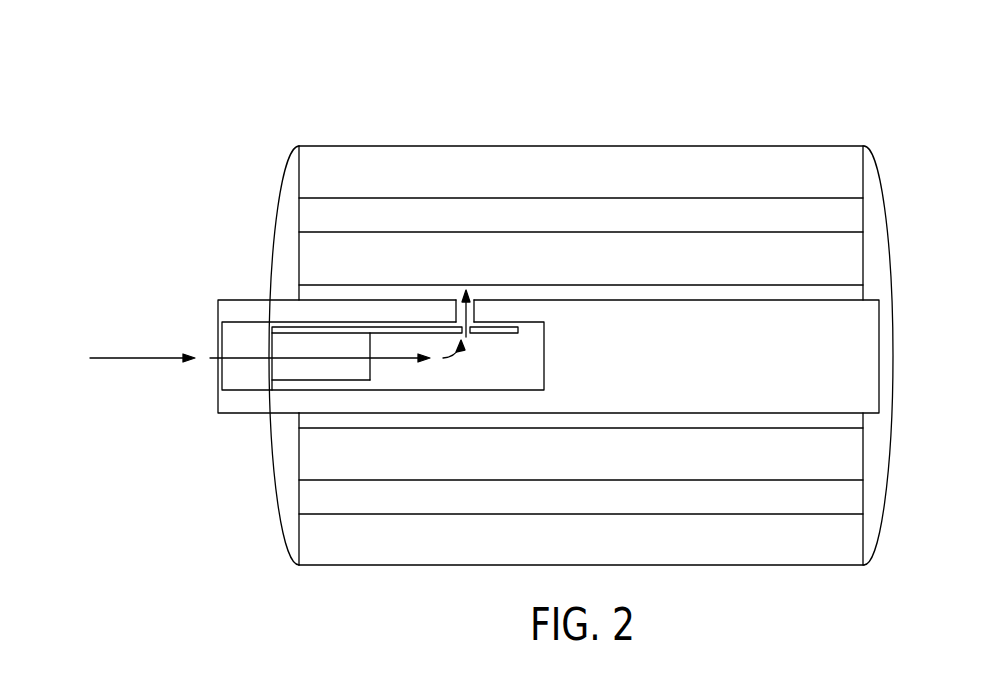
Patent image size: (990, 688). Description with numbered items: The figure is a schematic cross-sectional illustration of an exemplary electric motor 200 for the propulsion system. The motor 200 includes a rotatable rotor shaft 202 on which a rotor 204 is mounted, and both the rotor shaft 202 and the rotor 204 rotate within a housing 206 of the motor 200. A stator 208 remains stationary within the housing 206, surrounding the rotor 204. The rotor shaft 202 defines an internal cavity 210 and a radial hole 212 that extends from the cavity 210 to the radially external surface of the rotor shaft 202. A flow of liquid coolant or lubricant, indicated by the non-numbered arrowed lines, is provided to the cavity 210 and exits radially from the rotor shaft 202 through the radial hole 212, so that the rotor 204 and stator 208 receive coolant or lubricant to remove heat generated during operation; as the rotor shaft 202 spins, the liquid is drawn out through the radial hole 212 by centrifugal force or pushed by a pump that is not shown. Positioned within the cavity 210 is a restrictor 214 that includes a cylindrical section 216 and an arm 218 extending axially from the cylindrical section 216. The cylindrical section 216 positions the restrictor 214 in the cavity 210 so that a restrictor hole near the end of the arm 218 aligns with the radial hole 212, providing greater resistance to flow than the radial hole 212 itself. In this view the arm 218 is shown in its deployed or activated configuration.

The electric motor 200 is at (833, 86).
The rotor shaft 202 is at (868, 360).
The rotor 204 is at (857, 258).
The housing 206 is at (872, 530).
The stator 208 is at (855, 173).
The cavity 210 is at (233, 342).
The radial hole 212 is at (495, 312).
The restrictor 214 is at (278, 373).
The cylindrical section 216 is at (322, 387).
The arm 218 is at (408, 330).